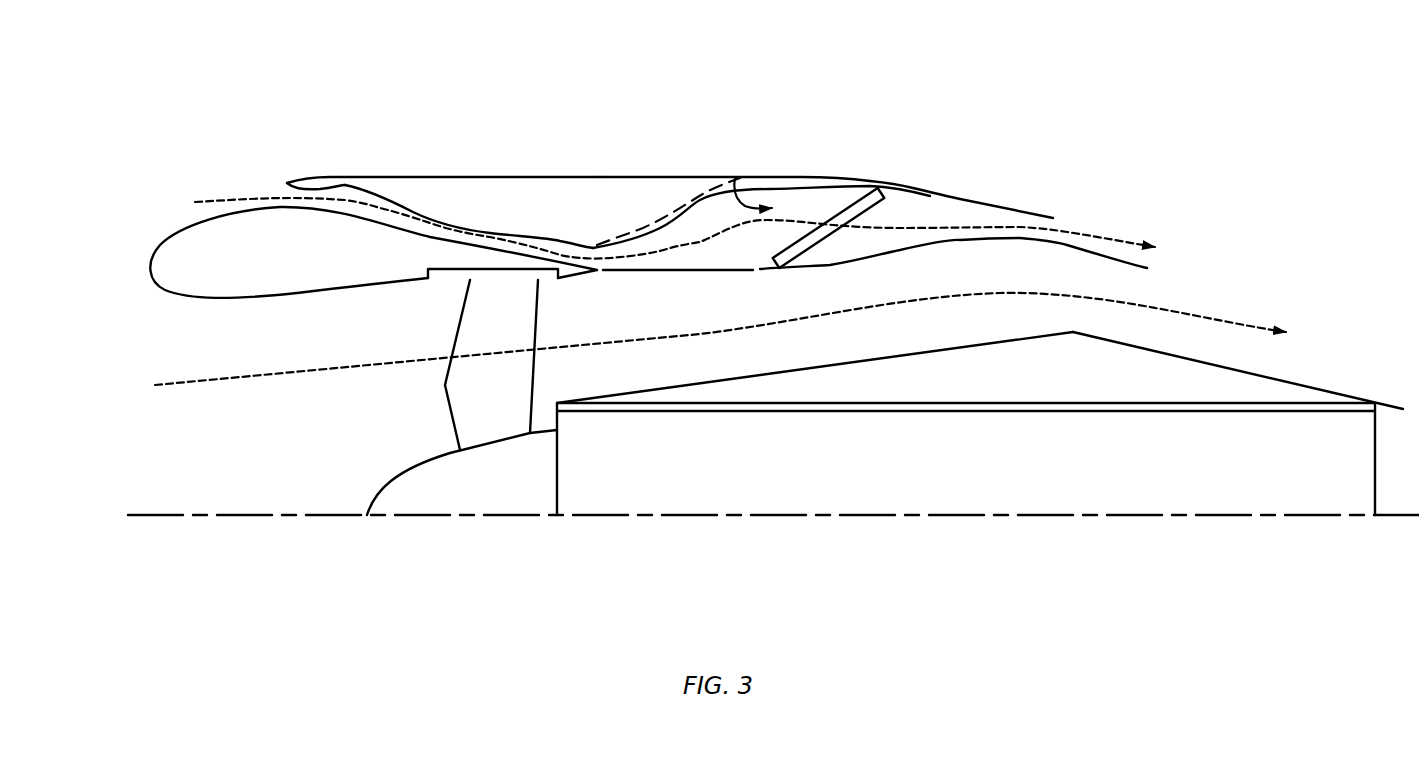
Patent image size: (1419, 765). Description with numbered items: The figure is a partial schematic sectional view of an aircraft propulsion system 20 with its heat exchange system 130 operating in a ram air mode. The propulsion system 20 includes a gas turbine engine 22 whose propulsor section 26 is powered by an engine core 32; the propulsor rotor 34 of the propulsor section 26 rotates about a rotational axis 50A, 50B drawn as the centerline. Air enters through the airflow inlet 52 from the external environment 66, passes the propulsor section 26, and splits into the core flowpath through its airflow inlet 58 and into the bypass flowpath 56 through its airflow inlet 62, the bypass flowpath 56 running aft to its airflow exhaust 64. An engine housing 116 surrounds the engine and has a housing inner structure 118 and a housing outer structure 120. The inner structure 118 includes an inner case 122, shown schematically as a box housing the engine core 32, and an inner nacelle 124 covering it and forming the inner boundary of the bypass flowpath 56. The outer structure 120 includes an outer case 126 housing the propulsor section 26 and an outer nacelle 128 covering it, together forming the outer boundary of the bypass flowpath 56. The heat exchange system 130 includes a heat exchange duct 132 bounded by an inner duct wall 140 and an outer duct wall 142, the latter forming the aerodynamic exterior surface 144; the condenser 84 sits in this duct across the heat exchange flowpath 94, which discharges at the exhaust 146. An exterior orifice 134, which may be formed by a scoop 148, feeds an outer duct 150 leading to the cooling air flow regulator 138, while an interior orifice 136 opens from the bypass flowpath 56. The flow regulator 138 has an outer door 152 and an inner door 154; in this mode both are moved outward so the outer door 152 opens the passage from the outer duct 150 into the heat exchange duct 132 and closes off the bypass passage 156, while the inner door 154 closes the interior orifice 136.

The aircraft propulsion system 20 is at (125, 111).
The gas turbine engine 22 is at (361, 570).
The propulsor section 26 is at (488, 545).
The engine core 32 is at (760, 517).
The propulsor rotor 34 is at (447, 387).
The rotational axis 50A is at (120, 565).
The rotational axis 50B is at (148, 518).
The airflow inlet 52 is at (153, 348).
The bypass flowpath 56 is at (833, 304).
The core flowpath airflow inlet 58 is at (551, 422).
The bypass flowpath airflow inlet 62 is at (560, 327).
The bypass flowpath airflow exhaust 64 is at (1149, 295).
The external environment 66 is at (416, 82).
The condenser 84 is at (843, 212).
The heat exchange flowpath 94 is at (737, 178).
The engine housing 116 is at (687, 135).
The housing inner structure 118 is at (1300, 371).
The housing outer structure 120 is at (594, 173).
The inner case 122 is at (935, 404).
The inner nacelle 124 is at (928, 353).
The outer case 126 is at (443, 272).
The outer nacelle 128 is at (483, 228).
The heat exchange system 130 is at (952, 172).
The heat exchange duct 132 is at (995, 196).
The exterior orifice 134 is at (275, 185).
The interior orifice 136 is at (602, 278).
The cooling air flow regulator 138 is at (695, 290).
The inner duct wall 140 is at (903, 258).
The outer duct wall 142 is at (913, 187).
The aerodynamic exterior surface 144 is at (460, 176).
The heat exchange flowpath exhaust 146 is at (1062, 221).
The scoop 148 is at (297, 168).
The outer duct 150 is at (497, 236).
The outer door 152 is at (657, 236).
The inner door 154 is at (713, 268).
The bypass passage 156 is at (677, 207).